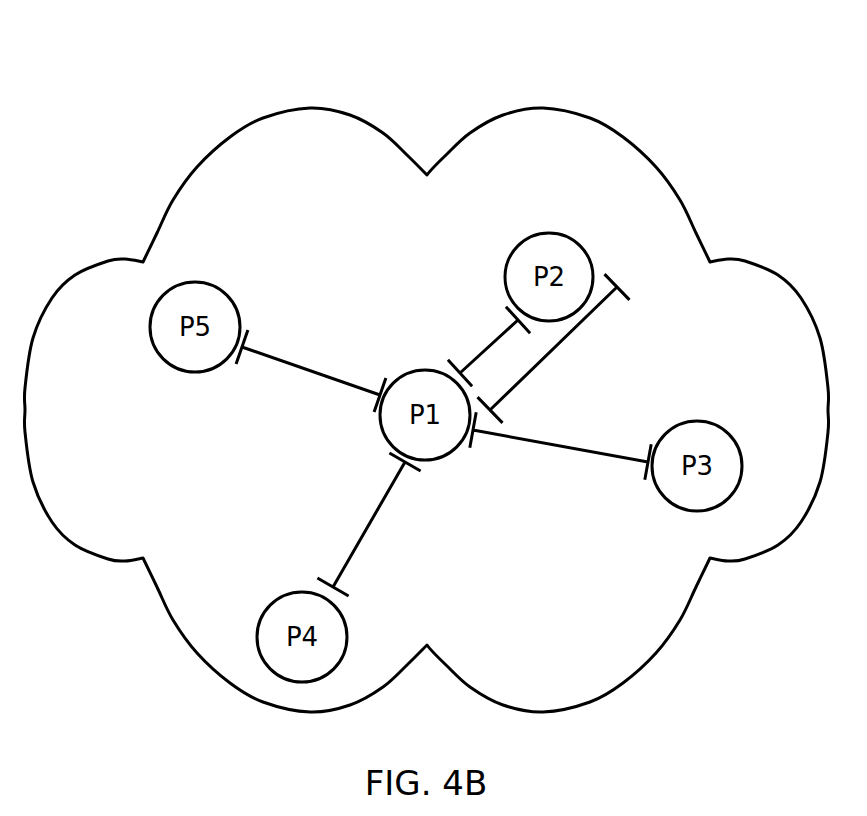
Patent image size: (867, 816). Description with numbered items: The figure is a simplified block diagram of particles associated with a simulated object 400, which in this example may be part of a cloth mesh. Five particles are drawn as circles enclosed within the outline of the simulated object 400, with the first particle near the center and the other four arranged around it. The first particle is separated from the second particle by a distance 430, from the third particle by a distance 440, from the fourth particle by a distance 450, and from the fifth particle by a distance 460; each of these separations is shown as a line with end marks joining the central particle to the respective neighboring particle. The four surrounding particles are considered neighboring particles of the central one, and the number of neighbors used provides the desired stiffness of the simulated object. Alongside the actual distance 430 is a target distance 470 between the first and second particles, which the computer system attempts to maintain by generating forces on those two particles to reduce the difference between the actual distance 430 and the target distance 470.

The simulated object 400 is at (428, 88).
The distance 430 is at (490, 345).
The distance 440 is at (557, 442).
The distance 450 is at (360, 528).
The distance 460 is at (280, 357).
The target distance 470 is at (545, 366).